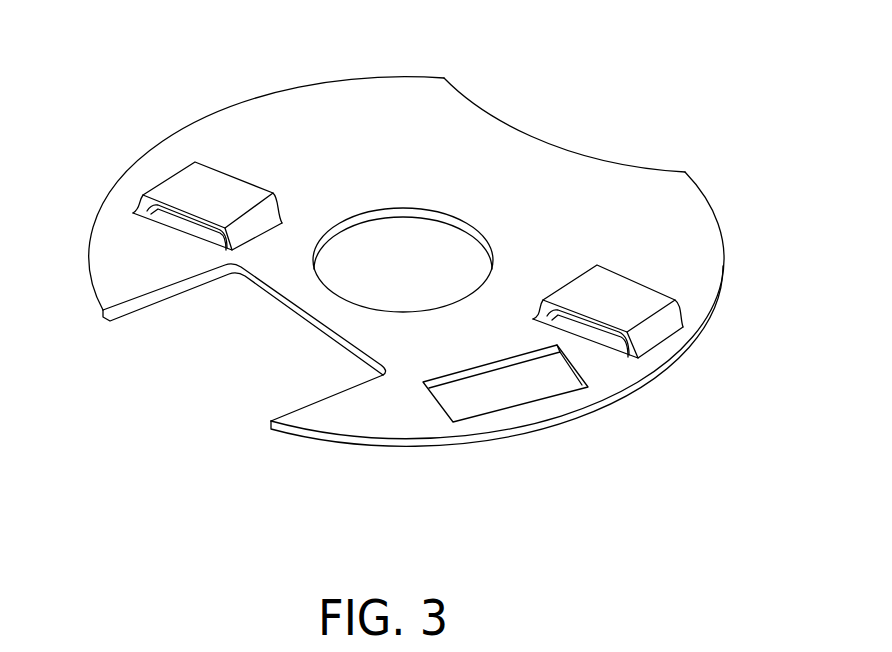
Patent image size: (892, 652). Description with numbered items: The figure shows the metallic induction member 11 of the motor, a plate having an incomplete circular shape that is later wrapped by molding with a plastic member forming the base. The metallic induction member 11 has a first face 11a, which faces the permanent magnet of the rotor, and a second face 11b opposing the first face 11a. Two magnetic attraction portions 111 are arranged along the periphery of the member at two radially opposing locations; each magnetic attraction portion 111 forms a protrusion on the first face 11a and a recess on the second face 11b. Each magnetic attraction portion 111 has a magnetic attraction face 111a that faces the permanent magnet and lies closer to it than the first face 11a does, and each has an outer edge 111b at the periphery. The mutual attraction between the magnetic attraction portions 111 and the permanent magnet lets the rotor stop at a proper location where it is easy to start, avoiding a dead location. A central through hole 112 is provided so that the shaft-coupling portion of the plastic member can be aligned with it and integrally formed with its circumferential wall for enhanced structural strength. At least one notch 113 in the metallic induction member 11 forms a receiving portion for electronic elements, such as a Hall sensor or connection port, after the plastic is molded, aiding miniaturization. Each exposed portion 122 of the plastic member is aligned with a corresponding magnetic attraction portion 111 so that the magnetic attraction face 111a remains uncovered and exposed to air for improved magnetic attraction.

The metallic induction member 11 is at (559, 422).
The first face 11a is at (693, 248).
The second face 11b is at (673, 363).
The magnetic attraction portion 111 is at (180, 208).
The magnetic attraction face 111a is at (197, 187).
The outer edge 111b is at (163, 180).
The through hole 112 is at (461, 233).
The notch 113 is at (222, 370).
The exposed portion 122 is at (232, 172).